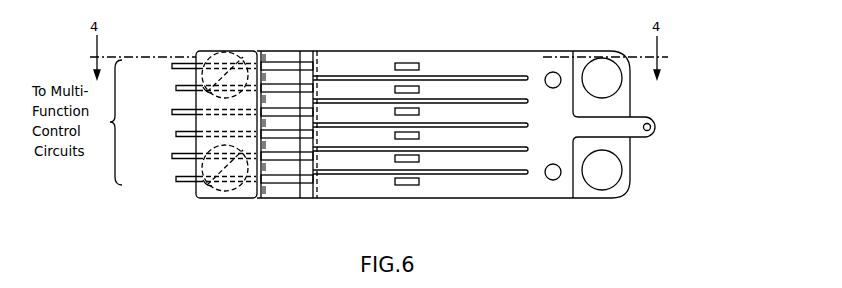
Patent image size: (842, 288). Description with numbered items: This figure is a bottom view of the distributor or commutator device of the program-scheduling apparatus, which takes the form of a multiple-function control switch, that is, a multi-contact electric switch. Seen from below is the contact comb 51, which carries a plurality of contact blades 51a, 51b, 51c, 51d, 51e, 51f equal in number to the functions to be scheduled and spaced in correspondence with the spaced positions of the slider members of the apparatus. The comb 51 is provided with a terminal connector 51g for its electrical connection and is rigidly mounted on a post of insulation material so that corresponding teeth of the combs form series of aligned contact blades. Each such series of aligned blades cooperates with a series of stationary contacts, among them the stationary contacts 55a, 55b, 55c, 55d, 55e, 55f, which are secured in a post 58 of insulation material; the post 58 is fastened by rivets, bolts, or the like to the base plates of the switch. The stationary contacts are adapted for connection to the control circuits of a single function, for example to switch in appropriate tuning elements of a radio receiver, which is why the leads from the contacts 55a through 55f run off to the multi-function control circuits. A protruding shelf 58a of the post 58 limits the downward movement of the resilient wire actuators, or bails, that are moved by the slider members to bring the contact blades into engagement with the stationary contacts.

The contact comb 51 is at (563, 187).
The contact blade 51a is at (424, 188).
The contact blade 51b is at (443, 163).
The contact blade 51c is at (490, 140).
The contact blade 51d is at (497, 115).
The contact blade 51e is at (470, 87).
The contact blade 51f is at (428, 66).
The terminal connector 51g is at (653, 138).
The stationary contact 55a is at (176, 180).
The stationary contact 55b is at (172, 157).
The stationary contact 55c is at (176, 134).
The stationary contact 55d is at (172, 112).
The stationary contact 55e is at (176, 88).
The stationary contact 55f is at (172, 66).
The post of insulation material 58 is at (202, 194).
The protruding shelf 58a is at (285, 196).